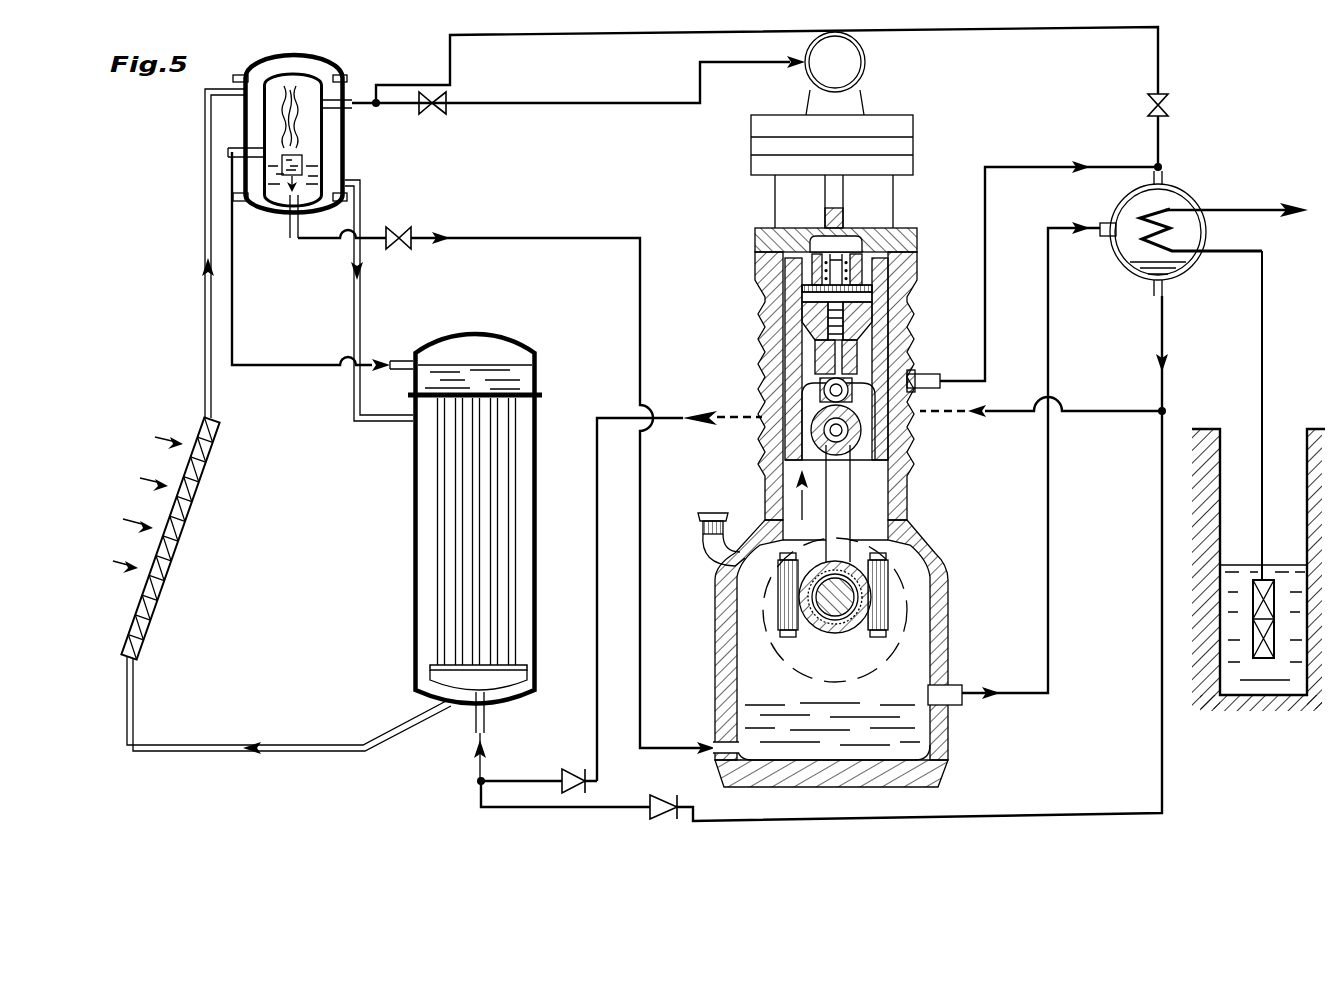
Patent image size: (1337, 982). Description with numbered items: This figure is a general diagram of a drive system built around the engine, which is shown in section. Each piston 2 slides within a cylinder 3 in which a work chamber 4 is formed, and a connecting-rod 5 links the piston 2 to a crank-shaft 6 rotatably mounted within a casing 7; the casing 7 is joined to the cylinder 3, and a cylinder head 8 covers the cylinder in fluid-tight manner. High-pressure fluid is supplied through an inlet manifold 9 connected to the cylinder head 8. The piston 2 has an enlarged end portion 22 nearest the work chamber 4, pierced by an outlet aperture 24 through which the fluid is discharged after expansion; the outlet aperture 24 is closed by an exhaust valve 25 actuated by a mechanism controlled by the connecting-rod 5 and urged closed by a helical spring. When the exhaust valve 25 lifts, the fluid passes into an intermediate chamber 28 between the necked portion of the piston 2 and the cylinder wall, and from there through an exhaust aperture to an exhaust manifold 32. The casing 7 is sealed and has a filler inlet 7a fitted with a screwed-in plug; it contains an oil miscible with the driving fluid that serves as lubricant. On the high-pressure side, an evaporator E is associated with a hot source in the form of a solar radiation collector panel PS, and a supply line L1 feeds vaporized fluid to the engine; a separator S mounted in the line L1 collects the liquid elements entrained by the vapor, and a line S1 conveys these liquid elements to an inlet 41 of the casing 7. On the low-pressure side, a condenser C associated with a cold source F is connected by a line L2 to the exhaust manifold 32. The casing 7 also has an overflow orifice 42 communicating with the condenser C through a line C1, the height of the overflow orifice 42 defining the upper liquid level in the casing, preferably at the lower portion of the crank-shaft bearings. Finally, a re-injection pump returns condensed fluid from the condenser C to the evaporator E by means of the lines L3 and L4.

The piston 2 is at (805, 502).
The cylinder 3 is at (897, 283).
The work chamber 4 is at (847, 247).
The connecting-rod 5 is at (840, 497).
The crank-shaft 6 is at (836, 640).
The casing 7 is at (945, 587).
The filler inlet 7a is at (707, 513).
The cylinder head 8 is at (900, 250).
The inlet manifold 9 is at (850, 62).
The enlarged end portion 22 is at (805, 330).
The outlet aperture 24 is at (863, 272).
The exhaust valve 25 is at (812, 285).
The intermediate chamber 28 is at (798, 365).
The exhaust manifold 32 is at (935, 375).
The inlet 41 is at (717, 747).
The overflow orifice 42 is at (968, 690).
The separator S is at (270, 58).
The line S1 is at (520, 236).
The solar radiation collector panel PS is at (168, 538).
The evaporator E is at (413, 547).
The supply line L1 is at (568, 102).
The line L2 is at (1025, 167).
The line L3 is at (1112, 408).
The line L4 is at (673, 416).
The condenser C is at (1183, 190).
The line C1 is at (1050, 653).
The cold source F is at (1235, 675).